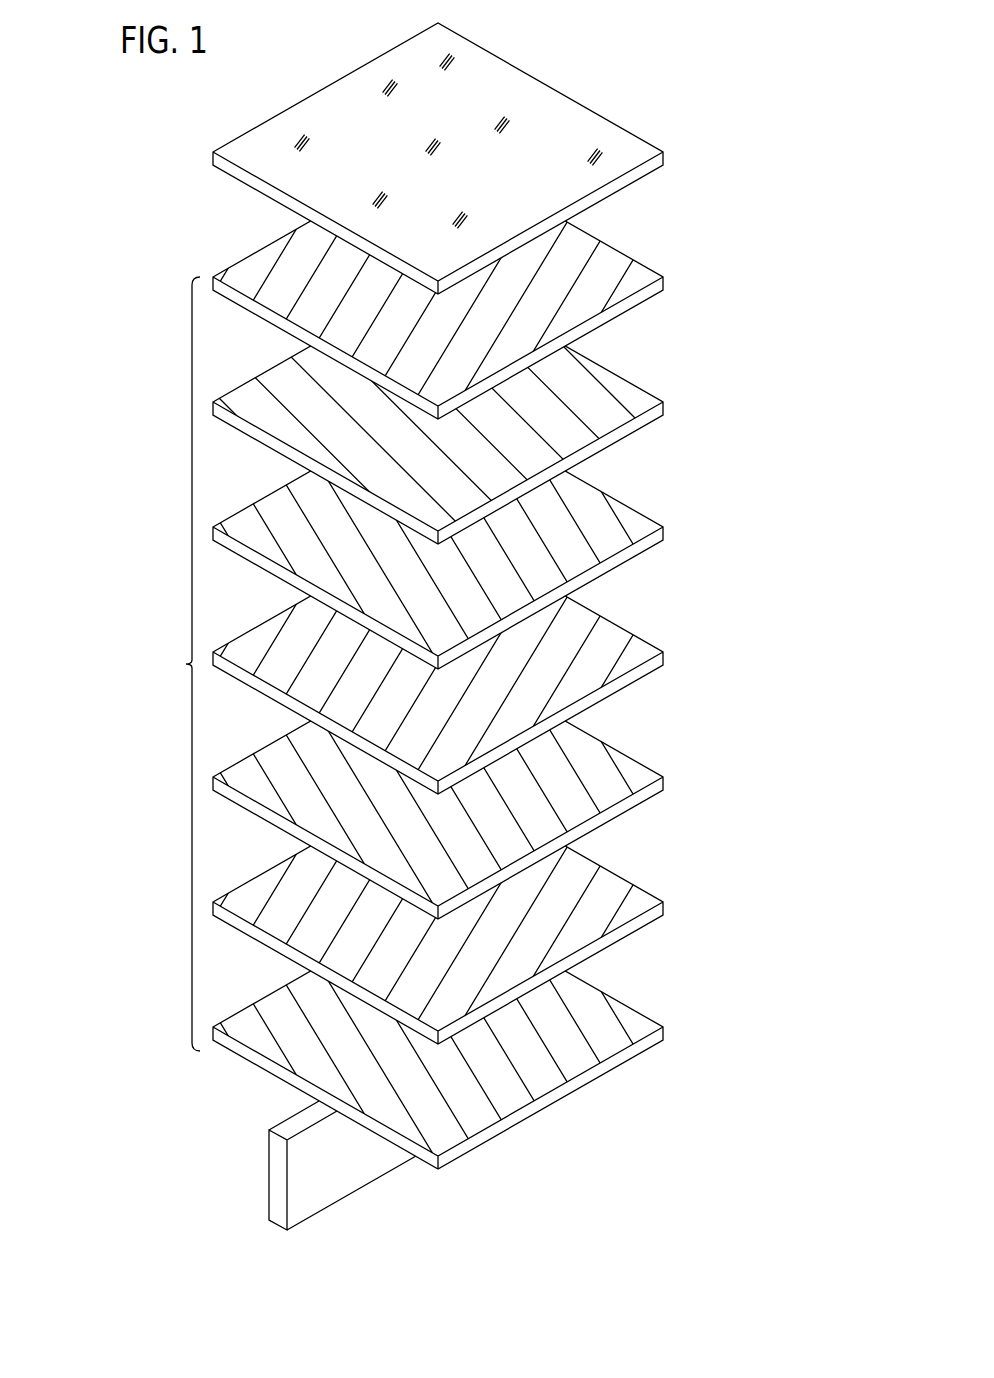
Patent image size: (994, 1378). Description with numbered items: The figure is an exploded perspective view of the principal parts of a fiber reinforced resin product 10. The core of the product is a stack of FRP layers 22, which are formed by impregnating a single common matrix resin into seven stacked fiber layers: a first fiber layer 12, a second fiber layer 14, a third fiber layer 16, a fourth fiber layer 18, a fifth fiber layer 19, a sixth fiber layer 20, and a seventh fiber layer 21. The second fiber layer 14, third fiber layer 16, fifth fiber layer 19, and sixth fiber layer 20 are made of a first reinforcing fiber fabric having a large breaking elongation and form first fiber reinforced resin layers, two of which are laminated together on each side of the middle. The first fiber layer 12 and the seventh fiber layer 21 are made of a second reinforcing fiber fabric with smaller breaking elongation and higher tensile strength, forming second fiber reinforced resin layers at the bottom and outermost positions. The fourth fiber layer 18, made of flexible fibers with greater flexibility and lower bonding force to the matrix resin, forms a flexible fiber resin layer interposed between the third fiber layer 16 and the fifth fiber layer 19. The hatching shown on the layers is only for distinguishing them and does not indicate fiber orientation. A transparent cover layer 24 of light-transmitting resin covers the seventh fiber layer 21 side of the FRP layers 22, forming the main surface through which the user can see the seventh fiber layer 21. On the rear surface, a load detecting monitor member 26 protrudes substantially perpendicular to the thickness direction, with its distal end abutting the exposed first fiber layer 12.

The fiber reinforced resin product 10 is at (139, 134).
The first fiber layer 12 is at (548, 1104).
The second fiber layer 14 is at (610, 939).
The third fiber layer 16 is at (610, 814).
The fourth fiber layer 18 is at (610, 689).
The fifth fiber layer 19 is at (610, 564).
The sixth fiber layer 20 is at (610, 439).
The seventh fiber layer 21 is at (600, 319).
The FRP layers 22 is at (124, 664).
The transparent cover layer 24 is at (532, 108).
The load detecting monitor member 26 is at (300, 1172).